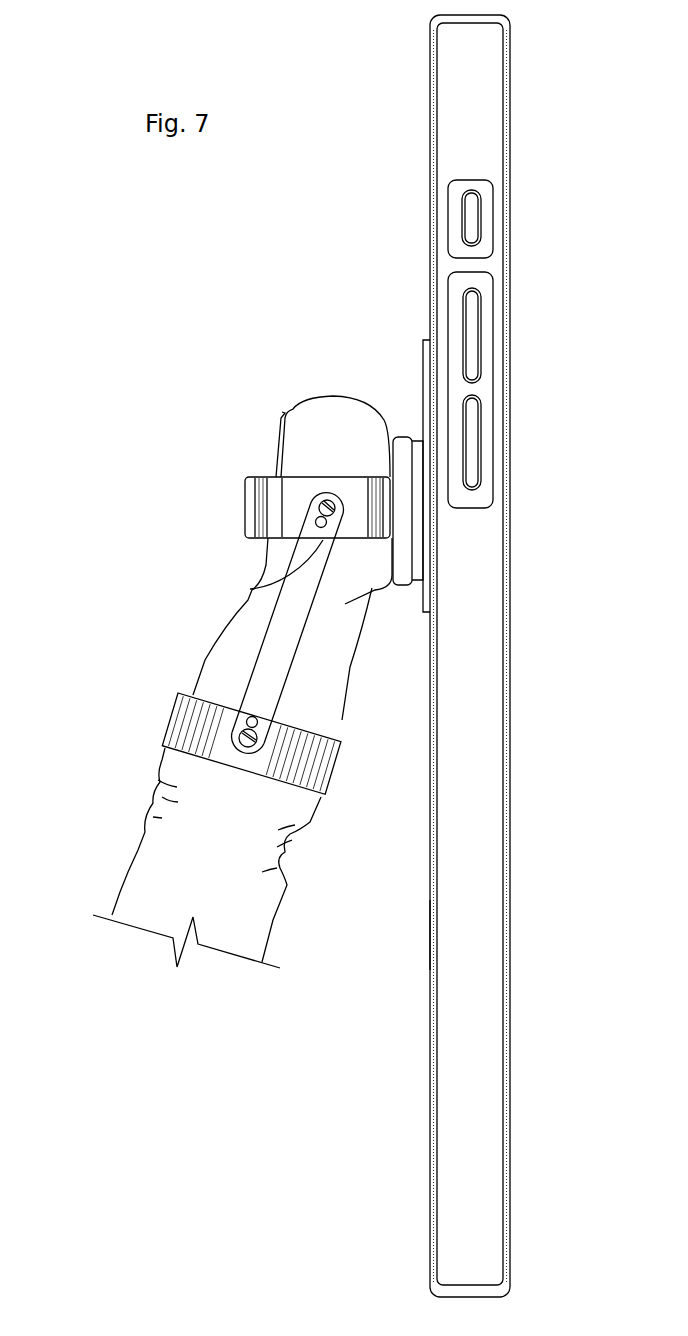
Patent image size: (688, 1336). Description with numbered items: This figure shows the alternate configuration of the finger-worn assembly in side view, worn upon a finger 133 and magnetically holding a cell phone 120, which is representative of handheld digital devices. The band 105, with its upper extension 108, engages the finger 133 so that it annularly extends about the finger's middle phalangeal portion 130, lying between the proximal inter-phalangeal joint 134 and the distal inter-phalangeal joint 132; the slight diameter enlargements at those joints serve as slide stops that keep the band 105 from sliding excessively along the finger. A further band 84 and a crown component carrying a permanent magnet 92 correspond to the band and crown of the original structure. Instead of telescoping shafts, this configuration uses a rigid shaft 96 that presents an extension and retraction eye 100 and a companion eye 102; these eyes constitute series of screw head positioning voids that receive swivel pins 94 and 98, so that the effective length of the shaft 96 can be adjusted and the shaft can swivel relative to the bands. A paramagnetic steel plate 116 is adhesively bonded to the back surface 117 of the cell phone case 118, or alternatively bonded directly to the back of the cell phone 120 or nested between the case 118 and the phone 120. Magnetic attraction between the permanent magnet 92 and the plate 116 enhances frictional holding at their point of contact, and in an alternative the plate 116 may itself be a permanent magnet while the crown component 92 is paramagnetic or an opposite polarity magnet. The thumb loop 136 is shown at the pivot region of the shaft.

The band 84 is at (268, 497).
The permanent magnet 92 is at (417, 437).
The swivel pin 94 is at (331, 477).
The rigid shaft 96 is at (268, 678).
The swivel pin 98 is at (262, 752).
The extension and retraction eye 100 is at (267, 580).
The extension and retraction eye 102 is at (245, 710).
The band 105 is at (158, 722).
The upper extension 108 is at (315, 768).
The paramagnetic steel plate 116 is at (423, 385).
The back surface 117 is at (430, 935).
The cell phone case 118 is at (477, 852).
The cell phone 120 is at (477, 495).
The middle phalangeal portion 130 is at (240, 643).
The distal inter-phalangeal joint 132 is at (267, 578).
The finger 133 is at (165, 892).
The proximal inter-phalangeal joint 134 is at (160, 782).
The thumb loop 136 is at (352, 415).